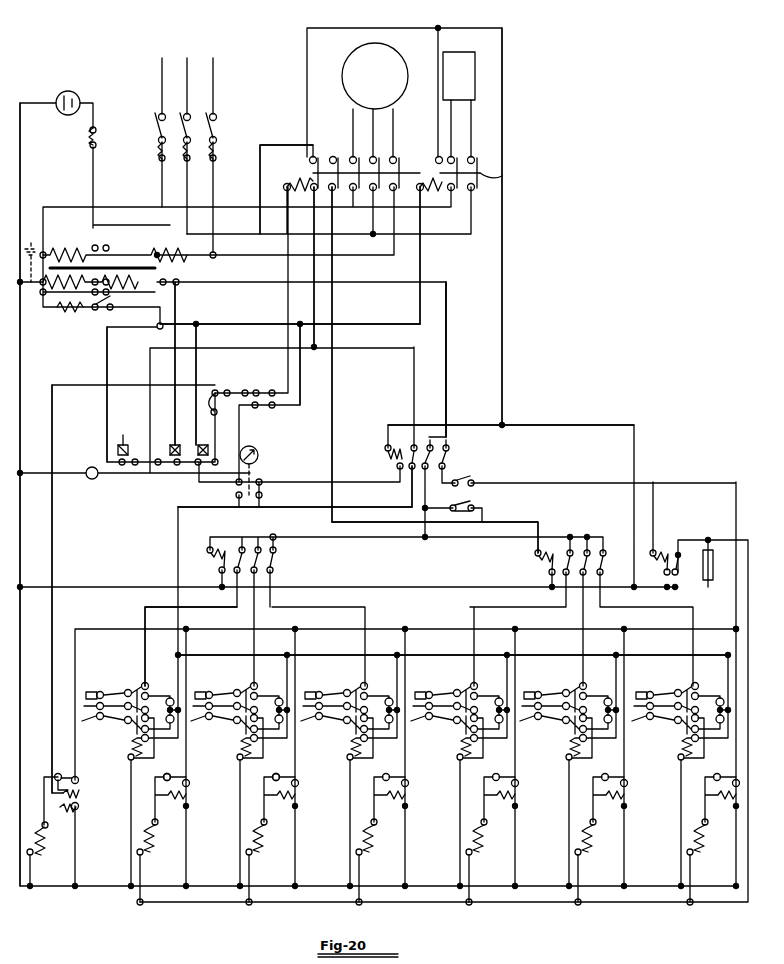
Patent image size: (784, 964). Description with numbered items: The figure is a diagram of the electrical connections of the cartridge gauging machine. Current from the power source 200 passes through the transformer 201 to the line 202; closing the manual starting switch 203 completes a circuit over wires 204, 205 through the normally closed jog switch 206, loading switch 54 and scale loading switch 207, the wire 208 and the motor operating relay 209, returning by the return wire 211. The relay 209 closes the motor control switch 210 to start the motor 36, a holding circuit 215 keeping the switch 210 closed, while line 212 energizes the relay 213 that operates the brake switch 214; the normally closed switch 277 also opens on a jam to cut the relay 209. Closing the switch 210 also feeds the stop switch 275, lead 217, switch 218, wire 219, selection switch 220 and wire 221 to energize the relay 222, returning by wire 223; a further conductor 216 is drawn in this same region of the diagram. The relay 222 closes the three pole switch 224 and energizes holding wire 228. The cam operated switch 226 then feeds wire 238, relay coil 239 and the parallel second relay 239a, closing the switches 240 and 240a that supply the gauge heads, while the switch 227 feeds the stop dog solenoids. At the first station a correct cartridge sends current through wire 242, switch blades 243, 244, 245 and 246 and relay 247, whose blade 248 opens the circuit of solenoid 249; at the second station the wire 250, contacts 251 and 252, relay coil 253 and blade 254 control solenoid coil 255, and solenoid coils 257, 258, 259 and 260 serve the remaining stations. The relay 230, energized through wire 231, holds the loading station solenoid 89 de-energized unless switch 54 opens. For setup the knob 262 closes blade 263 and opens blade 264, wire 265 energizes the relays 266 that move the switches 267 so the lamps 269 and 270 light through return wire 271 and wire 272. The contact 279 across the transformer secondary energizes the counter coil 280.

The motor 36 is at (408, 76).
The power source 200 is at (186, 144).
The return wire 211 is at (480, 14).
The motor operating relay 209 is at (292, 154).
The relay 213 is at (434, 154).
The switch 218 is at (321, 140).
The motor control switch 210 is at (356, 170).
The holding circuit 215 is at (260, 173).
The brake switch 214 is at (502, 175).
The transformer 201 is at (113, 262).
The line 202 is at (228, 284).
The counter coil 280 is at (68, 312).
The electric contact 279 is at (104, 311).
The wire 204 is at (107, 354).
The wire 208 is at (260, 324).
The wire 205 is at (196, 344).
The lead 217 is at (314, 296).
The line 212 is at (424, 266).
The conductor 216 is at (300, 382).
The wire 219 is at (332, 380).
The wire 223 is at (464, 420).
The loading switch 54 is at (215, 392).
The scale loading switch 207 is at (246, 388).
The automatically operating switch 277 is at (270, 391).
The stop switch 275 is at (175, 444).
The starting switch 203 is at (123, 444).
The jog switch 206 is at (212, 448).
The knob 262 is at (290, 462).
The switch blade 263 is at (234, 490).
The switch blade 264 is at (262, 492).
The wire 265 is at (176, 534).
The selection switch 220 is at (242, 508).
The wire 228 is at (376, 504).
The relay 222 is at (386, 448).
The wire 221 is at (374, 470).
The three pole switch 224 is at (446, 458).
The switch 227 is at (486, 478).
The switch 226 is at (474, 507).
The second relay 239a is at (208, 567).
The second switch 240a is at (278, 564).
The relay coil 239 is at (536, 554).
The wire 238 is at (520, 521).
The switch 240 is at (618, 554).
The wire 231 is at (40, 656).
The wire 242 is at (136, 616).
The wire 250 is at (250, 645).
The relay 247 is at (188, 806).
The switch blade 248 is at (170, 778).
The relay coil 253 is at (292, 794).
The switch blade 254 is at (279, 776).
The stop dog-operating solenoid 249 is at (147, 844).
The solenoid coil 255 is at (257, 838).
The solenoid coil 257 is at (367, 842).
The solenoid coil 258 is at (477, 842).
The solenoid coil 259 is at (586, 842).
The solenoid coil 260 is at (698, 842).
The stop dog operating solenoid 89 is at (38, 840).
The relay 230 is at (78, 806).
The relay 266 is at (132, 744).
The wire 272 is at (140, 762).
The lamp 269 is at (174, 722).
The switch 267 is at (128, 690).
The lamp 270 is at (145, 688).
The switch blade 243 is at (98, 692).
The switch blade 244 is at (94, 704).
The switch blade 245 is at (86, 722).
The switch blade 246 is at (96, 720).
The return wire 271 is at (96, 710).
The contact 251 is at (186, 696).
The contact 252 is at (205, 704).